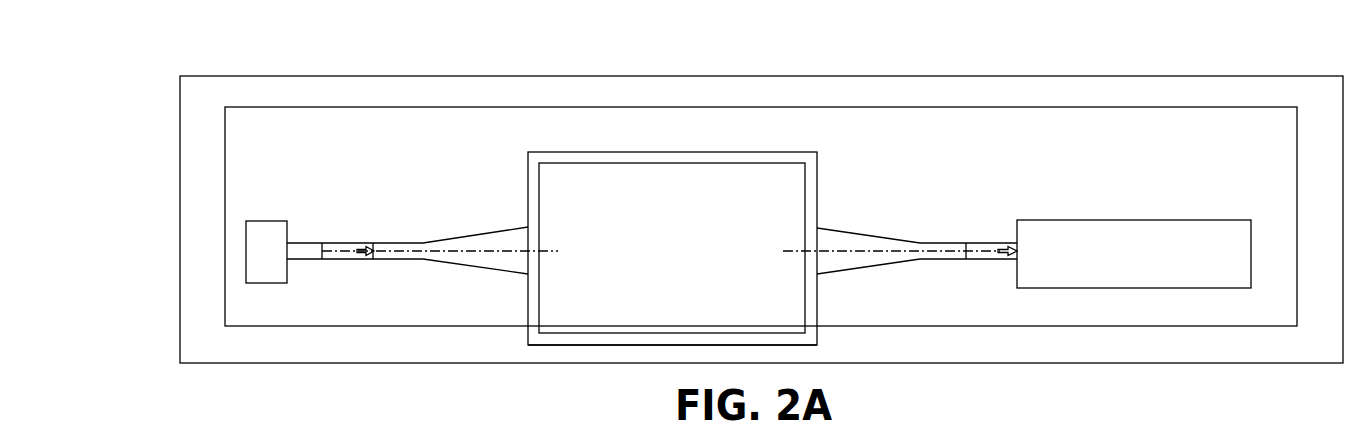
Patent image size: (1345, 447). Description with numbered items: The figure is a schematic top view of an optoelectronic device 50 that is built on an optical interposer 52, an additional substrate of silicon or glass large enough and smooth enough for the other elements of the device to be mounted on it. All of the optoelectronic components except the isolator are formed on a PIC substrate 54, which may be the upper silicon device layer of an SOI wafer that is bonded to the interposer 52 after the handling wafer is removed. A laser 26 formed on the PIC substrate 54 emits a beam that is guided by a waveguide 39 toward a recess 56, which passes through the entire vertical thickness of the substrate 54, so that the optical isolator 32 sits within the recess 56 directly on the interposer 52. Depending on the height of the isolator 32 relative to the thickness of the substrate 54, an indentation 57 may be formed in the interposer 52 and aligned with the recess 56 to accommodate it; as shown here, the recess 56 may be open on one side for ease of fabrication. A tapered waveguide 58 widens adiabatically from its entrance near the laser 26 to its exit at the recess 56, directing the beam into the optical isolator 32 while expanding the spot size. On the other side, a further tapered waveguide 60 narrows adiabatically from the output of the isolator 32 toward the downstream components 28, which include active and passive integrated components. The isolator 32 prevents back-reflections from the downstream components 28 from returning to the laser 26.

The optoelectronic device 50 is at (217, 50).
The optical interposer 52 is at (180, 211).
The PIC substrate 54 is at (652, 107).
The laser 26 is at (272, 221).
The waveguide 39 is at (338, 259).
The tapered waveguide 58 is at (486, 228).
The further tapered waveguide 60 is at (850, 228).
The recess 56 is at (528, 171).
The indentation 57 is at (613, 345).
The optical isolator 32 is at (597, 163).
The downstream components 28 is at (1140, 220).